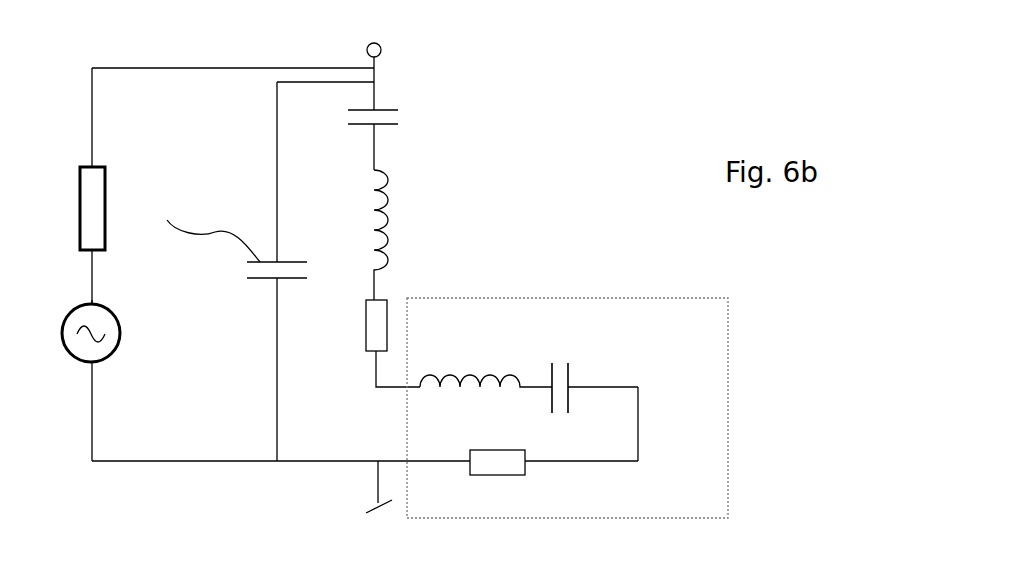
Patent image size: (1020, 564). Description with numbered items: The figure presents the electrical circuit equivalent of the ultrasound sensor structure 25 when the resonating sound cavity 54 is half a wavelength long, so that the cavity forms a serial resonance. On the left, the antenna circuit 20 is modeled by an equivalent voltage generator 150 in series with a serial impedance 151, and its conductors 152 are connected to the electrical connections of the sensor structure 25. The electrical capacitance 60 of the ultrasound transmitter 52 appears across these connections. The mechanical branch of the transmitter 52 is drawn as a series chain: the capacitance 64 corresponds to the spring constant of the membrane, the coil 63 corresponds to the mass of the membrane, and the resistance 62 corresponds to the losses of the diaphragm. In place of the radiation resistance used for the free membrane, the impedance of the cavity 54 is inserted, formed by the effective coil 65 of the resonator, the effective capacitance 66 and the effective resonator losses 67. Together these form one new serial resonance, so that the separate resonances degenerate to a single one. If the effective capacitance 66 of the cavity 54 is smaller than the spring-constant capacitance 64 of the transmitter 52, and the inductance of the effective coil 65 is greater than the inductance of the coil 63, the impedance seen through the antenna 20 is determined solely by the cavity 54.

The conductors of the antenna 152 is at (172, 68).
The serial impedance of the antenna 151 is at (105, 167).
The equivalent voltage generator of the antenna 150 is at (121, 333).
The antenna 20 is at (158, 297).
The ultrasound transmitter 52 is at (230, 107).
The electrical capacitance 60 is at (250, 280).
The sensor structure 25 is at (461, 85).
The capacitance of spring constant of membrane 64 is at (355, 124).
The mass of the membrane 63 is at (374, 205).
The losses of diaphragm 62 is at (366, 338).
The resonating sound cavity 54 is at (549, 277).
The effective coil of resonator 65 is at (432, 388).
The effective capacitance of the resonator 66 is at (569, 400).
The effective resonator losses 67 is at (494, 450).